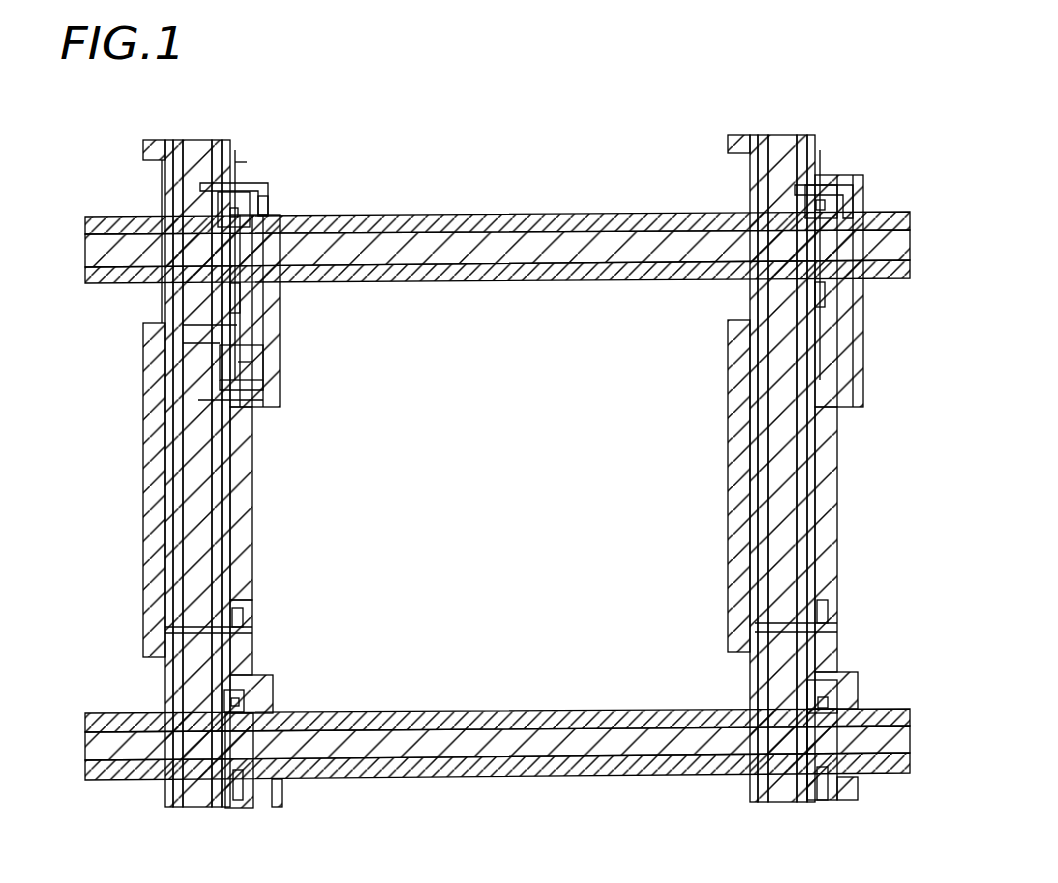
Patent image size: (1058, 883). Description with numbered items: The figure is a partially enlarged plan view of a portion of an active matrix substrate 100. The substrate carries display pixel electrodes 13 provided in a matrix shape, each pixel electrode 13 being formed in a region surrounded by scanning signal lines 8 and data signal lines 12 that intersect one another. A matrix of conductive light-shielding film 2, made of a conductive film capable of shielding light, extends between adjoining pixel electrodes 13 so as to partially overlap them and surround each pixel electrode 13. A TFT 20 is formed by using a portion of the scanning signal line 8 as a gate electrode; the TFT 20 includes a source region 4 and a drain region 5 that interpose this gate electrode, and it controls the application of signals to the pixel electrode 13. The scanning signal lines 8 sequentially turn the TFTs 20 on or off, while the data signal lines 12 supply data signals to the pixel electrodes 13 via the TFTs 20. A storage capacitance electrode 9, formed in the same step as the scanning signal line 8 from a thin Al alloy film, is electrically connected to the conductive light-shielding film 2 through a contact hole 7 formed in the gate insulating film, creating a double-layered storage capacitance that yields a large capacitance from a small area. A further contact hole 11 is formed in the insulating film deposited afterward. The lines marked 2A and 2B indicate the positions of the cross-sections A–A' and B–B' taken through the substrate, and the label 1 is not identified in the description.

The active matrix substrate 100 is at (510, 146).
The gate electrode 1 is at (230, 269).
The conductive light-shielding film 2 is at (372, 215).
The section line A 2A is at (285, 619).
The section line B 2B is at (237, 162).
The source region 4 is at (266, 186).
The drain region 5 is at (243, 328).
The contact hole 7 is at (227, 602).
The scanning signal line 8 is at (637, 240).
The storage capacitance electrode 9 is at (240, 480).
The contact hole 11 is at (227, 710).
The data signal line 12 is at (197, 675).
The pixel electrode 13 is at (523, 692).
The TFT 20 is at (270, 200).